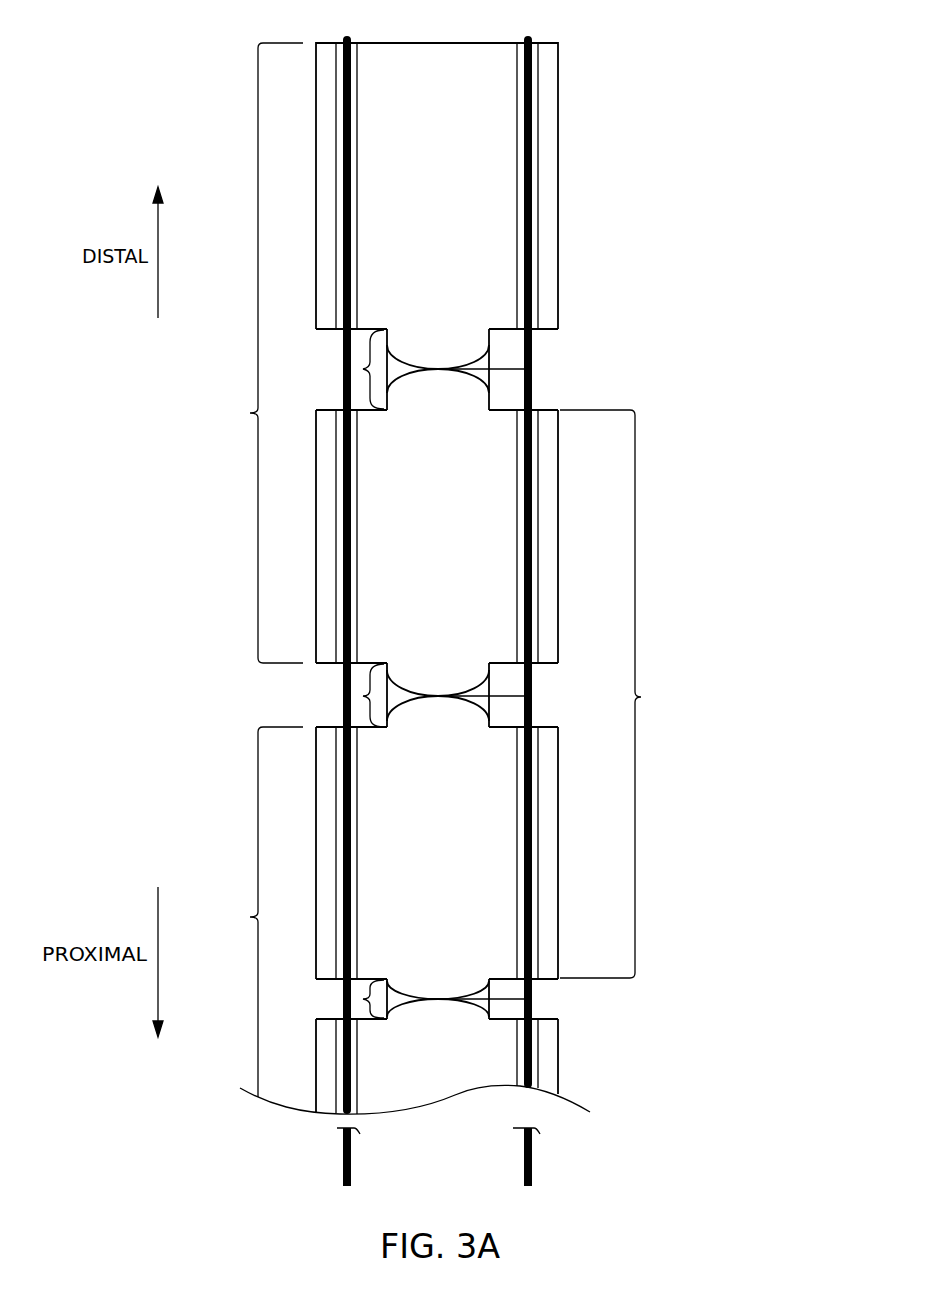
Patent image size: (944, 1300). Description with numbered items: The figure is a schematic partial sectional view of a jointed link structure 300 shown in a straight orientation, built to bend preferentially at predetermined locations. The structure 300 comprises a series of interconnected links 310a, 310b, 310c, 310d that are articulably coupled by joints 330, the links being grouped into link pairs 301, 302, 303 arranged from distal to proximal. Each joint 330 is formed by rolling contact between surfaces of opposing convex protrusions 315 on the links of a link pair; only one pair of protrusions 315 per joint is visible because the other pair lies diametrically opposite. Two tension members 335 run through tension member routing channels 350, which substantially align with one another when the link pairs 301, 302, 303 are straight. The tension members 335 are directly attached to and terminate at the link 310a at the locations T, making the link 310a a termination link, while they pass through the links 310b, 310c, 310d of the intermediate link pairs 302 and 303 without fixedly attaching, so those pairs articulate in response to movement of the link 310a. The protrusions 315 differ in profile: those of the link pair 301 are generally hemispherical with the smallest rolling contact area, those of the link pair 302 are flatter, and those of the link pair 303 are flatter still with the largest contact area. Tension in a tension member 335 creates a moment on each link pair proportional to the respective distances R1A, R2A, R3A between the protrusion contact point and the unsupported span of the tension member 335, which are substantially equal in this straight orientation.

The jointed link structure 300 is at (218, 687).
The link pair 301 is at (256, 353).
The link pair 302 is at (624, 694).
The link pair 303 is at (255, 912).
The link 310a is at (558, 227).
The link 310b is at (558, 554).
The link 310c is at (558, 849).
The link 310d is at (558, 1076).
The convex protrusion 315 is at (390, 396).
The joint 330 is at (363, 369).
The tension member 335 is at (520, 173).
The tension member routing channel 350 is at (540, 118).
The distance R1A is at (502, 367).
The distance R2A is at (506, 696).
The distance R3A is at (503, 995).
The termination location T is at (563, 13).